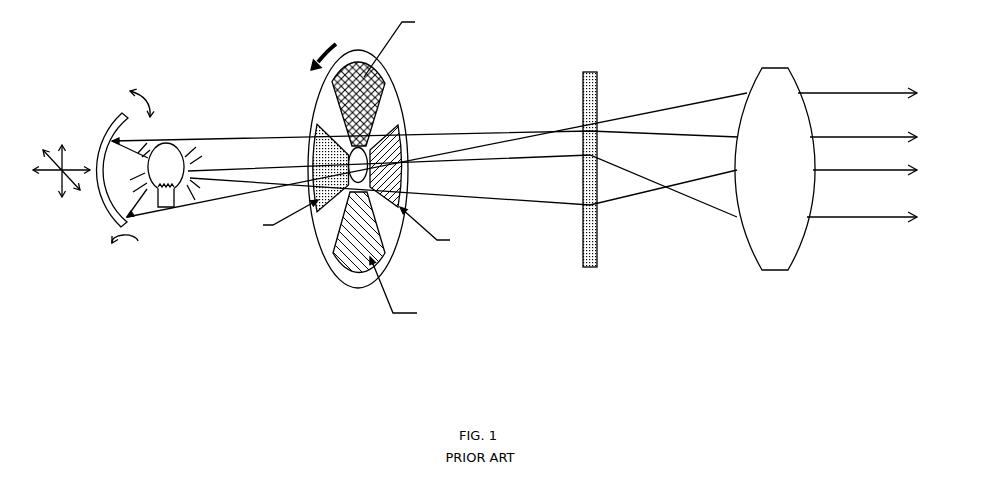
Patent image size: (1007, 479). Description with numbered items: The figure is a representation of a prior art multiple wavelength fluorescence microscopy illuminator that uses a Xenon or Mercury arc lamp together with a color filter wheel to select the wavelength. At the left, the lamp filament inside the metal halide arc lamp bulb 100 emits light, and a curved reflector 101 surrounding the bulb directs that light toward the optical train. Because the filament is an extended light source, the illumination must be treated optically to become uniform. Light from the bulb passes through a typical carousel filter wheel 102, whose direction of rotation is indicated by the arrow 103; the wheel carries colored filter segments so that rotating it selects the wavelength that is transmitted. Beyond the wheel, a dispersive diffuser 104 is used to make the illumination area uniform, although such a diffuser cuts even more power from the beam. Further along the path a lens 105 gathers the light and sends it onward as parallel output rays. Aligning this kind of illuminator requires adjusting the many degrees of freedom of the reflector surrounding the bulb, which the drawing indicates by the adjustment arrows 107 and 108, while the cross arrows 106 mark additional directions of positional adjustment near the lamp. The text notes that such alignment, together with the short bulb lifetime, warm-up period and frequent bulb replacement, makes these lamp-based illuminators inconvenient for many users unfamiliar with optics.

The metal halide arc lamp bulb 100 is at (165, 211).
The reflector 101 is at (110, 217).
The carousel filter wheel 102 is at (319, 244).
The direction of rotation 103 is at (326, 48).
The dispersive diffuser 104 is at (592, 187).
The lens 105 is at (775, 185).
The lamp translation directions 106 is at (61, 161).
The adjustment arrow 107 is at (152, 102).
The adjustment arrow 108 is at (122, 254).